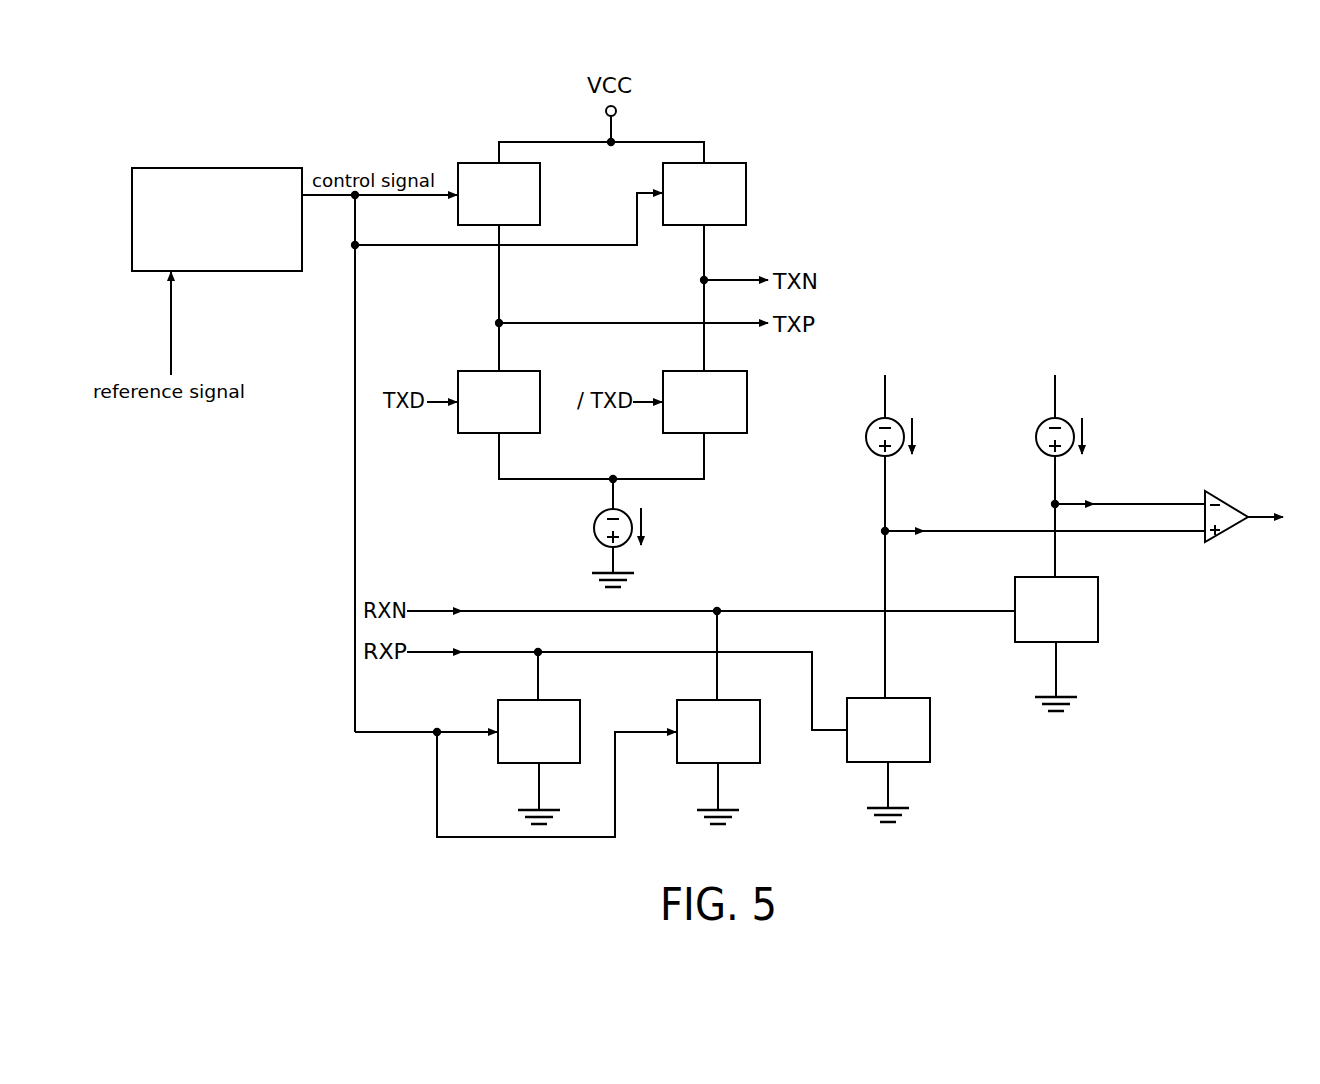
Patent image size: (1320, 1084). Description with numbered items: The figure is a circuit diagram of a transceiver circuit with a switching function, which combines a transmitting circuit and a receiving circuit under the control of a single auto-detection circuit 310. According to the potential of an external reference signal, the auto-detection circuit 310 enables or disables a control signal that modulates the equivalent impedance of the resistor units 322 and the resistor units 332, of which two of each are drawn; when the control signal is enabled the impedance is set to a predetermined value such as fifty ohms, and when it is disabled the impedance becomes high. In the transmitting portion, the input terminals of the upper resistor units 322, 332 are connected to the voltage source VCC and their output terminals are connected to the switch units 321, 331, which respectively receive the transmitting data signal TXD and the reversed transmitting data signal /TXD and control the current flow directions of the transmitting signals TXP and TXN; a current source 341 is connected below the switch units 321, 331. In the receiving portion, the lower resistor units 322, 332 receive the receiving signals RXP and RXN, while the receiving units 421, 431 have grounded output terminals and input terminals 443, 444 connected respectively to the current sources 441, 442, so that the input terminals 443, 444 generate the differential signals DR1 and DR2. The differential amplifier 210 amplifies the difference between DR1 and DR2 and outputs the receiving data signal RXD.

The auto-detection circuit 310 is at (267, 271).
The resistor unit 322 is at (519, 204).
The resistor unit 332 is at (724, 204).
The switch unit 321 is at (519, 414).
The switch unit 331 is at (725, 414).
The current source 341 is at (618, 533).
The current source 441 is at (890, 415).
The current source 442 is at (1057, 415).
The input terminal 443 is at (1020, 539).
The input terminal 444 is at (1107, 511).
The receiving unit 431 is at (1078, 621).
The receiving unit 421 is at (909, 744).
The differential amplifier 210 is at (1230, 530).